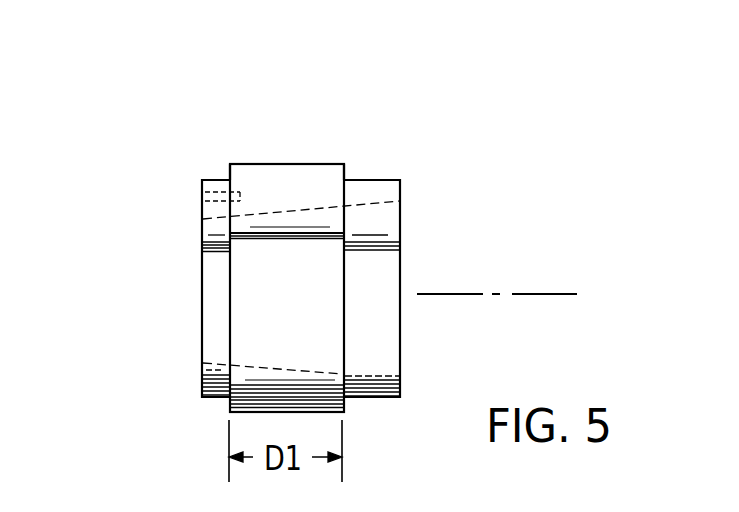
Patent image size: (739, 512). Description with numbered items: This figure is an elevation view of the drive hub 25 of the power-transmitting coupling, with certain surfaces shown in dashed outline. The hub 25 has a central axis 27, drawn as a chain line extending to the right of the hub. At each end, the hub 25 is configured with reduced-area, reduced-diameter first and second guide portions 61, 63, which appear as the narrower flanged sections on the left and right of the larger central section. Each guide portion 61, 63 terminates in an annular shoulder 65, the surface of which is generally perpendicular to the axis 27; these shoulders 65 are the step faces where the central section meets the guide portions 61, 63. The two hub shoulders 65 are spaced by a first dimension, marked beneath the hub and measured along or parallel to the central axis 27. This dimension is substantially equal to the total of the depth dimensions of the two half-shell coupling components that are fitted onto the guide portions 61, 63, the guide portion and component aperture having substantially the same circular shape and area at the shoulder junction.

The drive hub 25 is at (290, 130).
The first guide portion 61 is at (213, 179).
The second guide portion 63 is at (377, 179).
The annular shoulder 65 is at (228, 179).
The central axis 27 is at (532, 294).